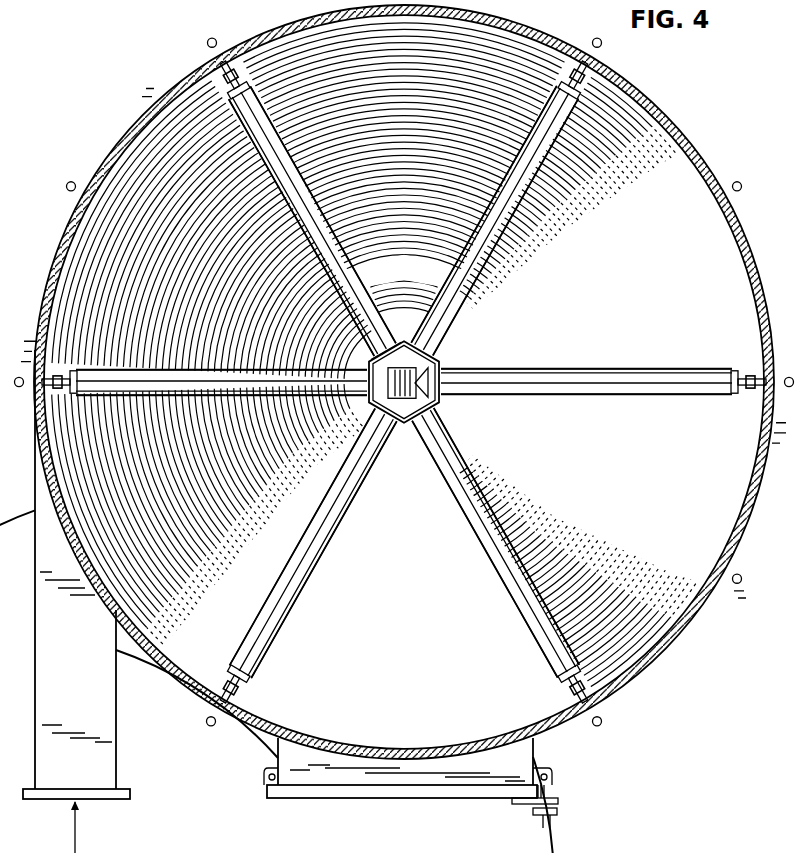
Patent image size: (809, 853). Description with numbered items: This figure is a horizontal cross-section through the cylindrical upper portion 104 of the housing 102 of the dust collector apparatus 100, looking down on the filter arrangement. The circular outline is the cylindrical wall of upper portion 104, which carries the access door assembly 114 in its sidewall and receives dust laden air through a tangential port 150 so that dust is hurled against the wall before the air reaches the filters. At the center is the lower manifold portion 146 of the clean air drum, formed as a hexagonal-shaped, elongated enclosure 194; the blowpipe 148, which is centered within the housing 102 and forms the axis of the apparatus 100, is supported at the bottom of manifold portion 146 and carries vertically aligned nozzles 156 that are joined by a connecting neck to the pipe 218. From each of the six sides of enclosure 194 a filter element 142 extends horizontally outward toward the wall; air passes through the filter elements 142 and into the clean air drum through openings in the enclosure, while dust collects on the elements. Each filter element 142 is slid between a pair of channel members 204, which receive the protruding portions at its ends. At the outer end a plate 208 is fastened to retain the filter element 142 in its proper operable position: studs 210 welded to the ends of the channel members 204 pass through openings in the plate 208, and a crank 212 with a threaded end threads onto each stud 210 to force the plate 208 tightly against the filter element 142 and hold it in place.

The dust collector apparatus 100 is at (78, 130).
The housing 102 is at (134, 112).
The cylindrical upper portion 104 is at (205, 60).
The access door assembly 114 is at (395, 797).
The filter elements 142 is at (441, 300).
The lower manifold portion 146 is at (450, 363).
The blowpipe 148 is at (401, 403).
The tangential port 150 is at (100, 770).
The nozzles 156 is at (441, 384).
The hexagonal-shaped elongated enclosure 194 is at (371, 356).
The channel member 204 is at (318, 201).
The plate 208 is at (253, 92).
The studs 210 is at (245, 76).
The crank 212 is at (230, 93).
The pipe 218 is at (360, 346).